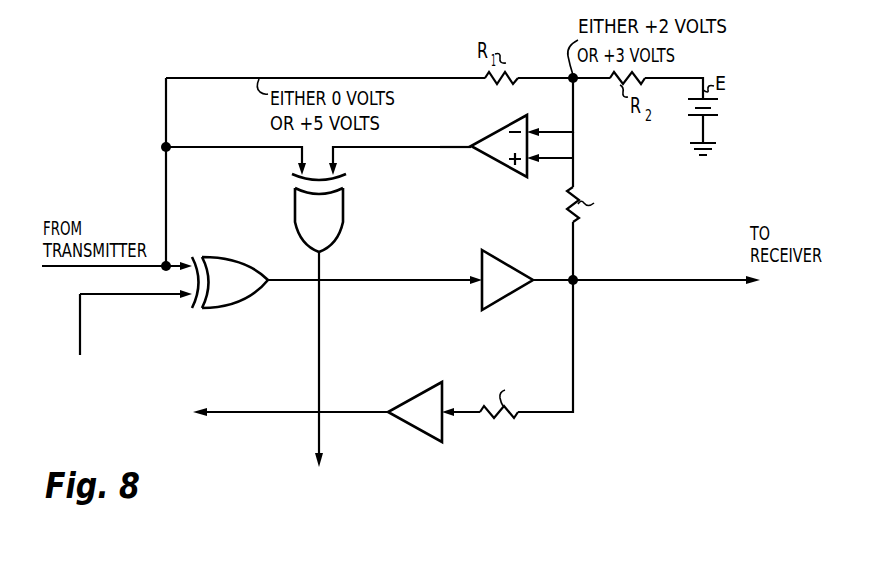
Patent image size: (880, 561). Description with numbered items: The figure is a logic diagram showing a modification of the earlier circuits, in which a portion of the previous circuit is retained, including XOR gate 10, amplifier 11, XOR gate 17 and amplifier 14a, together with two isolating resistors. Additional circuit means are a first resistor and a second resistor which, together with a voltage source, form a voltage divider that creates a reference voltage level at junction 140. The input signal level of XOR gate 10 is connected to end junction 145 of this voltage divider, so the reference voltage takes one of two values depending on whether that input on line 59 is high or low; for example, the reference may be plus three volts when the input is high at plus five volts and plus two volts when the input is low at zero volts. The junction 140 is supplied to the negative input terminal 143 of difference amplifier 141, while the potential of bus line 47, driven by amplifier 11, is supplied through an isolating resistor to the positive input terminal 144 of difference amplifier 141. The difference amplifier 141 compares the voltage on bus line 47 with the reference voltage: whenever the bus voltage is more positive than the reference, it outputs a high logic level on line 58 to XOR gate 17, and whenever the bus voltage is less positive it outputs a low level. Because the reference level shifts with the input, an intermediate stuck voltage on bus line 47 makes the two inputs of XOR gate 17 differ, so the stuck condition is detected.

The XOR gate 10 is at (244, 242).
The amplifier 11 is at (517, 292).
The amplifier 14a is at (470, 385).
The XOR gate 17 is at (342, 218).
The bus line 47 is at (657, 278).
The line 58 is at (336, 153).
The input signal level 59 is at (210, 148).
The junction 140 is at (572, 76).
The difference amplifier 141 is at (498, 121).
The negative input terminal 143 is at (555, 133).
The positive input terminal 144 is at (555, 160).
The end junction 145 is at (163, 148).